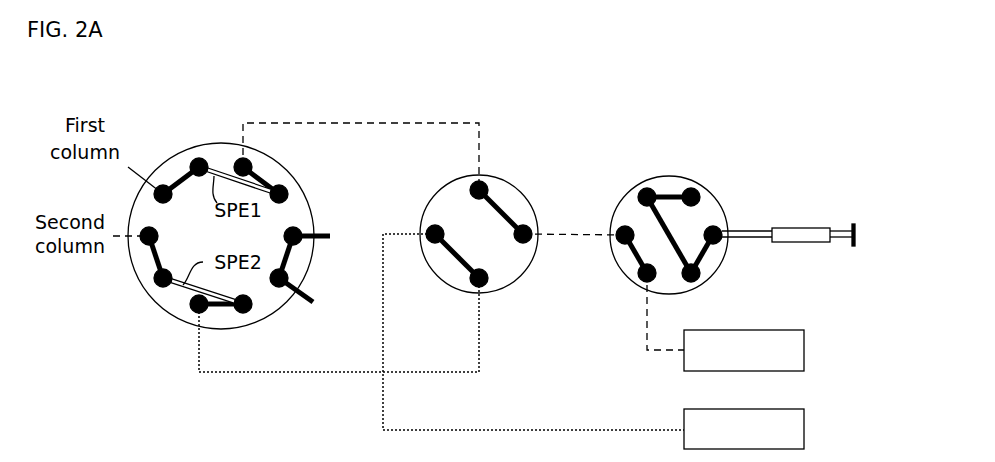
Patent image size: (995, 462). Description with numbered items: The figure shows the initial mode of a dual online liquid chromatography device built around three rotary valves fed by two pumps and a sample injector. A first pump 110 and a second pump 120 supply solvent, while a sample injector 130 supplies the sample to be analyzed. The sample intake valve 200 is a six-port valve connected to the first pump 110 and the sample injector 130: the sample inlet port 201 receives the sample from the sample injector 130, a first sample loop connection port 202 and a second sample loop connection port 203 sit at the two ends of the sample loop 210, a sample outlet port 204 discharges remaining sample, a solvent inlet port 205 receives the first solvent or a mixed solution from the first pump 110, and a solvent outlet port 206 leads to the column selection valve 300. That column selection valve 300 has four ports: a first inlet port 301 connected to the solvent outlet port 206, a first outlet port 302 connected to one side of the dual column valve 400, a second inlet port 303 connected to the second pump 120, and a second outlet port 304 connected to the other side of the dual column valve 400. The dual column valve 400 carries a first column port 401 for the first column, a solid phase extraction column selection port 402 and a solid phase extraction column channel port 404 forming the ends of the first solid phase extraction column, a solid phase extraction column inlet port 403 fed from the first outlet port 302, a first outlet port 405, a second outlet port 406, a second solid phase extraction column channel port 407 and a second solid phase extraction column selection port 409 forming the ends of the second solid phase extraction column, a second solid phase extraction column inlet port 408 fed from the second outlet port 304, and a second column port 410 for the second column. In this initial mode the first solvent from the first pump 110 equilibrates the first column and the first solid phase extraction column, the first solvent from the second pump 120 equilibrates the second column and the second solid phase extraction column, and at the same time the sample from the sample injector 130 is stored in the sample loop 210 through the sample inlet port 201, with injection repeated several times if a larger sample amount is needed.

The first pump 110 is at (804, 350).
The second pump 120 is at (804, 430).
The sample injector 130 is at (800, 227).
The sample intake valve 200 is at (683, 177).
The sample inlet port 201 is at (723, 245).
The first sample loop connection port 202 is at (703, 278).
The second sample loop connection port 203 is at (650, 190).
The sample outlet port 204 is at (700, 191).
The solvent inlet port 205 is at (640, 283).
The solvent outlet port 206 is at (620, 247).
The sample loop 210 is at (670, 252).
The column selection valve 300 is at (447, 180).
The first inlet port 301 is at (530, 223).
The first outlet port 302 is at (487, 188).
The second inlet port 303 is at (435, 244).
The second outlet port 304 is at (490, 274).
The dual column valve 400 is at (195, 142).
The first column port 401 is at (156, 201).
The solid phase extraction column selection port 402 is at (199, 166).
The solid phase extraction column inlet port 403 is at (243, 166).
The solid phase extraction column channel port 404 is at (279, 193).
The first outlet port 405 is at (297, 232).
The second outlet port 406 is at (279, 287).
The second solid phase extraction column channel port 407 is at (250, 310).
The second solid phase extraction column inlet port 408 is at (195, 310).
The second solid phase extraction column selection port 409 is at (152, 285).
The second column port 410 is at (145, 249).